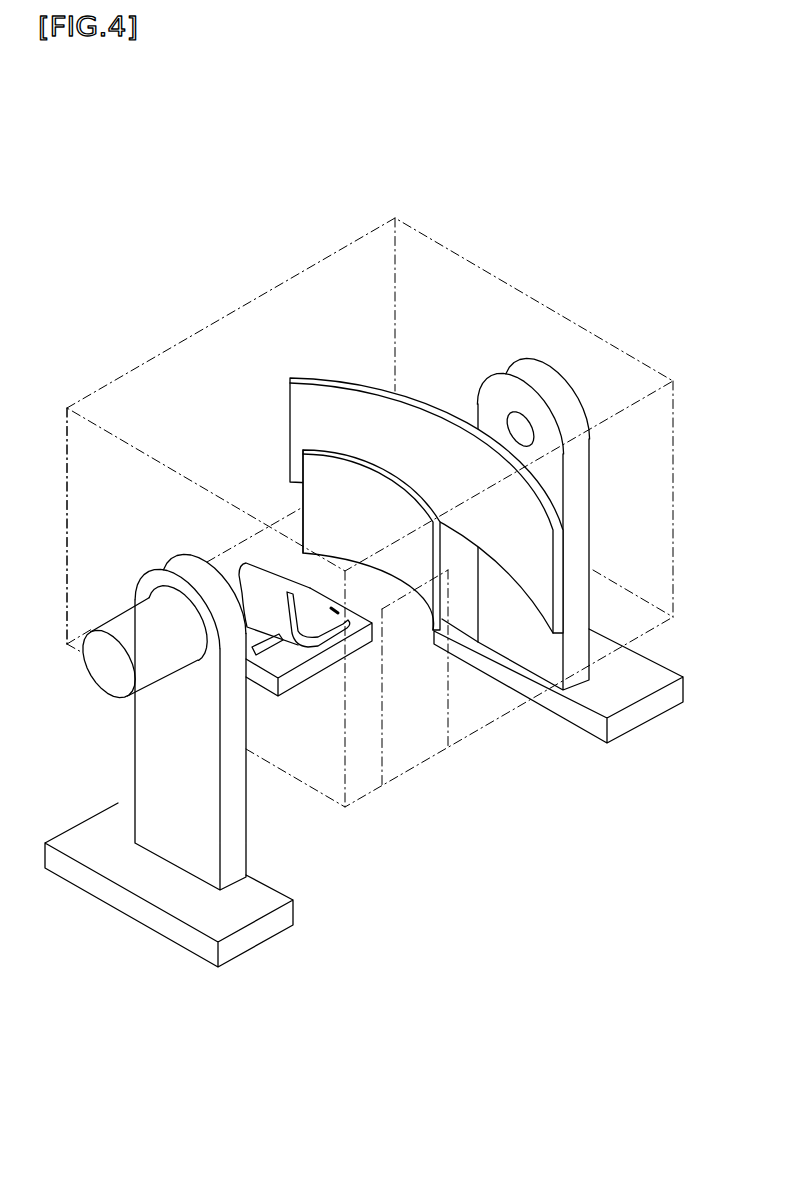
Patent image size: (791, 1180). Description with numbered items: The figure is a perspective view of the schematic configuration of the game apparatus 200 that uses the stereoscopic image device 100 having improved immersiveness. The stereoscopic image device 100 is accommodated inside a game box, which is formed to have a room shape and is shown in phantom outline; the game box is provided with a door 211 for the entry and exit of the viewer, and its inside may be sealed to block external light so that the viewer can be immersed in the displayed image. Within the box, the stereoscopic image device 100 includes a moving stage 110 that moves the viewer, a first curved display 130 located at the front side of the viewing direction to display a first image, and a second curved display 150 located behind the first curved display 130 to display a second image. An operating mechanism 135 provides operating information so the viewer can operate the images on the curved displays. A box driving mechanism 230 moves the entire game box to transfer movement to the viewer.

The game apparatus 200 is at (262, 135).
The door 211 is at (450, 700).
The box driving mechanism 230 is at (141, 656).
The stereoscopic image device 100 is at (307, 420).
The moving stage 110 is at (322, 663).
The first curved display 130 is at (337, 450).
The operating mechanism 135 is at (300, 490).
The second curved display 150 is at (315, 388).